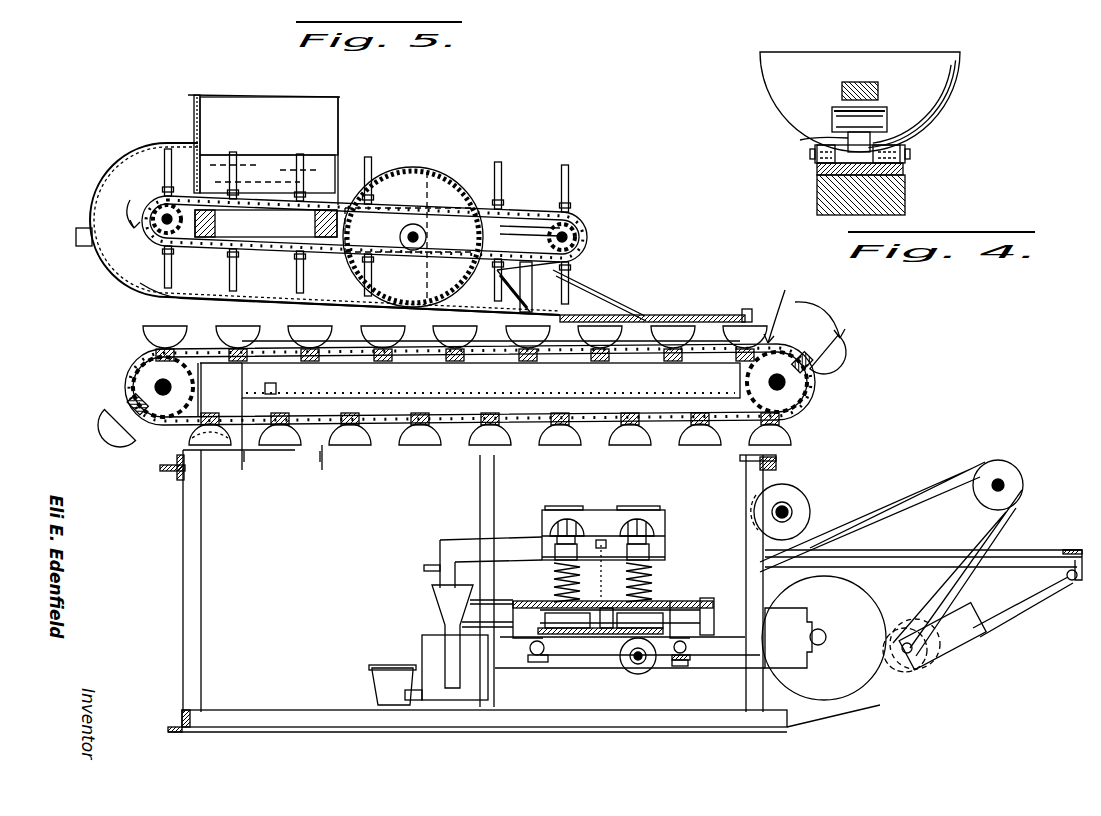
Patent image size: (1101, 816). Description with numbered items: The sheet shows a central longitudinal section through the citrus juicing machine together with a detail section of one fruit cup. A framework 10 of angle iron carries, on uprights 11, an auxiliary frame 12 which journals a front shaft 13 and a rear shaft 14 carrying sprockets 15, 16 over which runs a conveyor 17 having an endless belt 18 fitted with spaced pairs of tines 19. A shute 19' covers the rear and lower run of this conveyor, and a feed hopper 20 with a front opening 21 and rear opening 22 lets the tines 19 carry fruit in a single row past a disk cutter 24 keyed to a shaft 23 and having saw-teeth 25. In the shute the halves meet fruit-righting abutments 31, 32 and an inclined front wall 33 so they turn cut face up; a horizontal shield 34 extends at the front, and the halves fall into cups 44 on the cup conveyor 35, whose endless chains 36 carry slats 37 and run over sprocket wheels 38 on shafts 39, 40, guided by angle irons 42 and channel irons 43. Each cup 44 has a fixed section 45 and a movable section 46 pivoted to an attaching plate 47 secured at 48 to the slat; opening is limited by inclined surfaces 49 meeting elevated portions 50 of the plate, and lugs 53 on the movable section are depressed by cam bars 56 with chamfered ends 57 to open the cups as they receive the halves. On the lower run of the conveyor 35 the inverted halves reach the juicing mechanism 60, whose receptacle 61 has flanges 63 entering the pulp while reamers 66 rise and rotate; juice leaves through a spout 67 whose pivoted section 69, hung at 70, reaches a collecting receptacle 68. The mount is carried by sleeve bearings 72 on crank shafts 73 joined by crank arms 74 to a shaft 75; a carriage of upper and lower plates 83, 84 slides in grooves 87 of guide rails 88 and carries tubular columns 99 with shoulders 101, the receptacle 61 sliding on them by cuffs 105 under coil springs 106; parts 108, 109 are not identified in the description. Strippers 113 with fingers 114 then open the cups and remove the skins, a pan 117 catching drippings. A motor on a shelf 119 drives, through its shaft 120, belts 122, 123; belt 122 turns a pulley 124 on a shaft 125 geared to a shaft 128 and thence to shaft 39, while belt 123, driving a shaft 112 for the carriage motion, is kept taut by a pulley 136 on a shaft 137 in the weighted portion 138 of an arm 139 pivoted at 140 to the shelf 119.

In FIG. 5, the framework 10 is at (201, 592).
In FIG. 5, the uprights 11 is at (246, 312).
In FIG. 5, the auxiliary frame 12 is at (76, 240).
In FIG. 5, the transverse shaft 13 is at (576, 238).
In FIG. 5, the transverse shaft 14 is at (150, 212).
In FIG. 5, the sprocket or pulley 15 is at (586, 220).
In FIG. 5, the sprocket or pulley 16 is at (160, 224).
In FIG. 5, the conveyor 17 is at (178, 278).
In FIG. 5, the endless belt or sprocket 18 is at (525, 212).
In FIG. 5, the tines or flights 19 is at (354, 211).
In FIG. 5, the shute 19' is at (325, 217).
In FIG. 5, the feed hopper 20 is at (194, 122).
In FIG. 5, the opening 21 is at (340, 182).
In FIG. 5, the opening 22 is at (205, 168).
In FIG. 5, the shaft 23 is at (420, 232).
In FIG. 5, the disk cutter 24 is at (410, 170).
In FIG. 5, the saw-teeth 25 is at (478, 185).
In FIG. 5, the fruit-righting abutment 31 is at (527, 290).
In FIG. 5, the fruit-righting abutment 32 is at (622, 290).
In FIG. 5, the inclined front wall 33 is at (632, 310).
In FIG. 5, the horizontal shield or extension 34 is at (779, 301).
In FIG. 5, the discharge 35 is at (804, 300).
In FIG. 5, the endless chains 36 is at (247, 452).
In FIG. 5, the cross-bars or slats 37 is at (142, 366).
In FIG. 4, the cross-bars or slats 37 is at (905, 196).
In FIG. 5, the sprocket wheels 38 is at (148, 378).
In FIG. 5, the shaft 39 is at (798, 380).
In FIG. 5, the shaft 40 is at (158, 390).
In FIG. 5, the angle irons 42 is at (280, 345).
In FIG. 5, the U-shaped channel members 43 is at (592, 440).
In FIG. 5, the cups 44 is at (142, 333).
In FIG. 5, the cup sections 45 is at (140, 440).
In FIG. 4, the movable cup sections 46 is at (946, 100).
In FIG. 5, the attaching plates 47 is at (344, 366).
In FIG. 4, the bolts 48 is at (910, 152).
In FIG. 4, the inclined surfaces 49 is at (800, 140).
In FIG. 4, the elevated portions 50 is at (902, 135).
In FIG. 4, the lugs 53 is at (880, 92).
In FIG. 5, the cam bars 56 is at (722, 310).
In FIG. 5, the chamfered ends 57 is at (590, 300).
In FIG. 5, the juicing mechanism 60 is at (656, 522).
In FIG. 5, the receptacle 61 is at (612, 512).
In FIG. 5, the flanges or beads 63 is at (570, 514).
In FIG. 5, the reamers 66 is at (546, 532).
In FIG. 5, the spout 67 is at (520, 522).
In FIG. 5, the collecting receptacle 68 is at (425, 652).
In FIG. 5, the spout section 69 is at (445, 612).
In FIG. 5, the pivot 70 is at (440, 540).
In FIG. 5, the sleeve bearings 72 is at (542, 665).
In FIG. 5, the crank shafts 73 is at (536, 658).
In FIG. 5, the crank arms 74 is at (546, 662).
In FIG. 5, the shaft 75 is at (448, 628).
In FIG. 5, the upper plate 83 is at (706, 597).
In FIG. 5, the lower plate 84 is at (608, 662).
In FIG. 5, the grooves 87 is at (500, 604).
In FIG. 5, the guide rails 88 is at (668, 600).
In FIG. 5, the tubular columns 99 is at (614, 538).
In FIG. 5, the shoulders 101 is at (602, 545).
In FIG. 5, the cuffs 105 is at (558, 550).
In FIG. 5, the coil springs 106 is at (558, 572).
In FIG. 5, the block 108 is at (568, 632).
In FIG. 5, the block 109 is at (598, 636).
In FIG. 5, the shaft 112 is at (652, 668).
In FIG. 5, the strippers 113 is at (172, 462).
In FIG. 5, the stripping fingers 114 is at (196, 440).
In FIG. 5, the pan 117 is at (322, 452).
In FIG. 5, the shelf 119 is at (1056, 550).
In FIG. 5, the driving shaft 120 is at (1000, 485).
In FIG. 5, the endless belt 122 is at (956, 488).
In FIG. 5, the endless belt 123 is at (884, 504).
In FIG. 5, the pulley 124 is at (872, 616).
In FIG. 5, the shaft 125 is at (820, 650).
In FIG. 5, the shaft 128 is at (788, 508).
In FIG. 5, the pulley 136 is at (910, 660).
In FIG. 5, the shaft 137 is at (930, 668).
In FIG. 5, the weighted portion 138 is at (972, 648).
In FIG. 5, the arm 139 is at (1003, 612).
In FIG. 5, the pivot 140 is at (1073, 582).